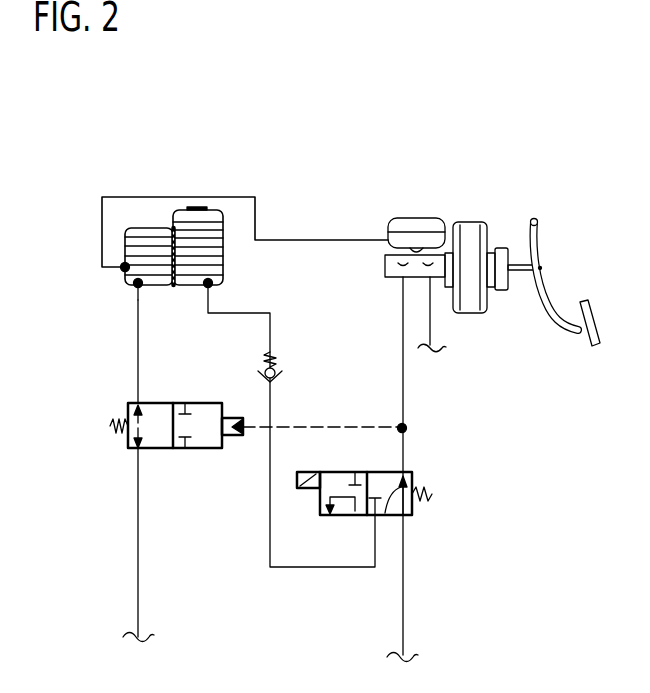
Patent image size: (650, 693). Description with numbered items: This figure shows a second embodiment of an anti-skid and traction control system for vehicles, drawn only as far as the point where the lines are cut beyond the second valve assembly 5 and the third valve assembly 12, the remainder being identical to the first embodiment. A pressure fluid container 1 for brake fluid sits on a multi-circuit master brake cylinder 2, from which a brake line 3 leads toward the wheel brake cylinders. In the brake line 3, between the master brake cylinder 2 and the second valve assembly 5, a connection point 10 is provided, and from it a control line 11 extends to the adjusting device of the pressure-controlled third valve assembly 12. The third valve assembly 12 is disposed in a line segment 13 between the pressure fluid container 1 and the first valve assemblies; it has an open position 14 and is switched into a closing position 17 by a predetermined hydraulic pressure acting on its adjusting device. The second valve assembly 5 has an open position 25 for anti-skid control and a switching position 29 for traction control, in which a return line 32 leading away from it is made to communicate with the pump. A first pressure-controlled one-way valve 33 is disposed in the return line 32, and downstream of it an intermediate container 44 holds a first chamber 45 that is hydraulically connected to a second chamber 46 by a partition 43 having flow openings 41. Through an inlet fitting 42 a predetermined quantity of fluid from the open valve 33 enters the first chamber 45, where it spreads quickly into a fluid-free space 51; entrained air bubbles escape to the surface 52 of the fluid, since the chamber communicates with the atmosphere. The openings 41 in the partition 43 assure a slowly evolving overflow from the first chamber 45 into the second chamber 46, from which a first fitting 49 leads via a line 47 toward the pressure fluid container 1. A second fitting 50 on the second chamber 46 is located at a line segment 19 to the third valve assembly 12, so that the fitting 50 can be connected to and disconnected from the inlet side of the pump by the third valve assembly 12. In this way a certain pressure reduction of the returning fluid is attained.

The pressure fluid container 1 is at (424, 224).
The multi-circuit master brake cylinder 2 is at (397, 278).
The brake line 3 is at (405, 397).
The second valve assembly 5 is at (312, 470).
The connection point 10 is at (405, 430).
The control line 11 is at (368, 420).
The third valve assembly 12 is at (169, 458).
The line segment 13 is at (138, 567).
The open position 14 is at (129, 437).
The closing position 17 is at (205, 403).
The line segment 19 is at (133, 380).
The open position 25 is at (383, 517).
The switching position 29 is at (338, 482).
The return line 32 is at (270, 527).
The first pressure-controlled one-way valve 33 is at (282, 377).
The flow openings 41 is at (162, 265).
The inlet fitting 42 is at (207, 288).
The partition 43 is at (162, 265).
The intermediate container 44 is at (236, 271).
The first chamber 45 is at (197, 272).
The second chamber 46 is at (137, 286).
The line 47 is at (320, 238).
The first fitting 49 is at (124, 268).
The second fitting 50 is at (135, 287).
The space 51 is at (180, 225).
The surface 52 is at (208, 222).